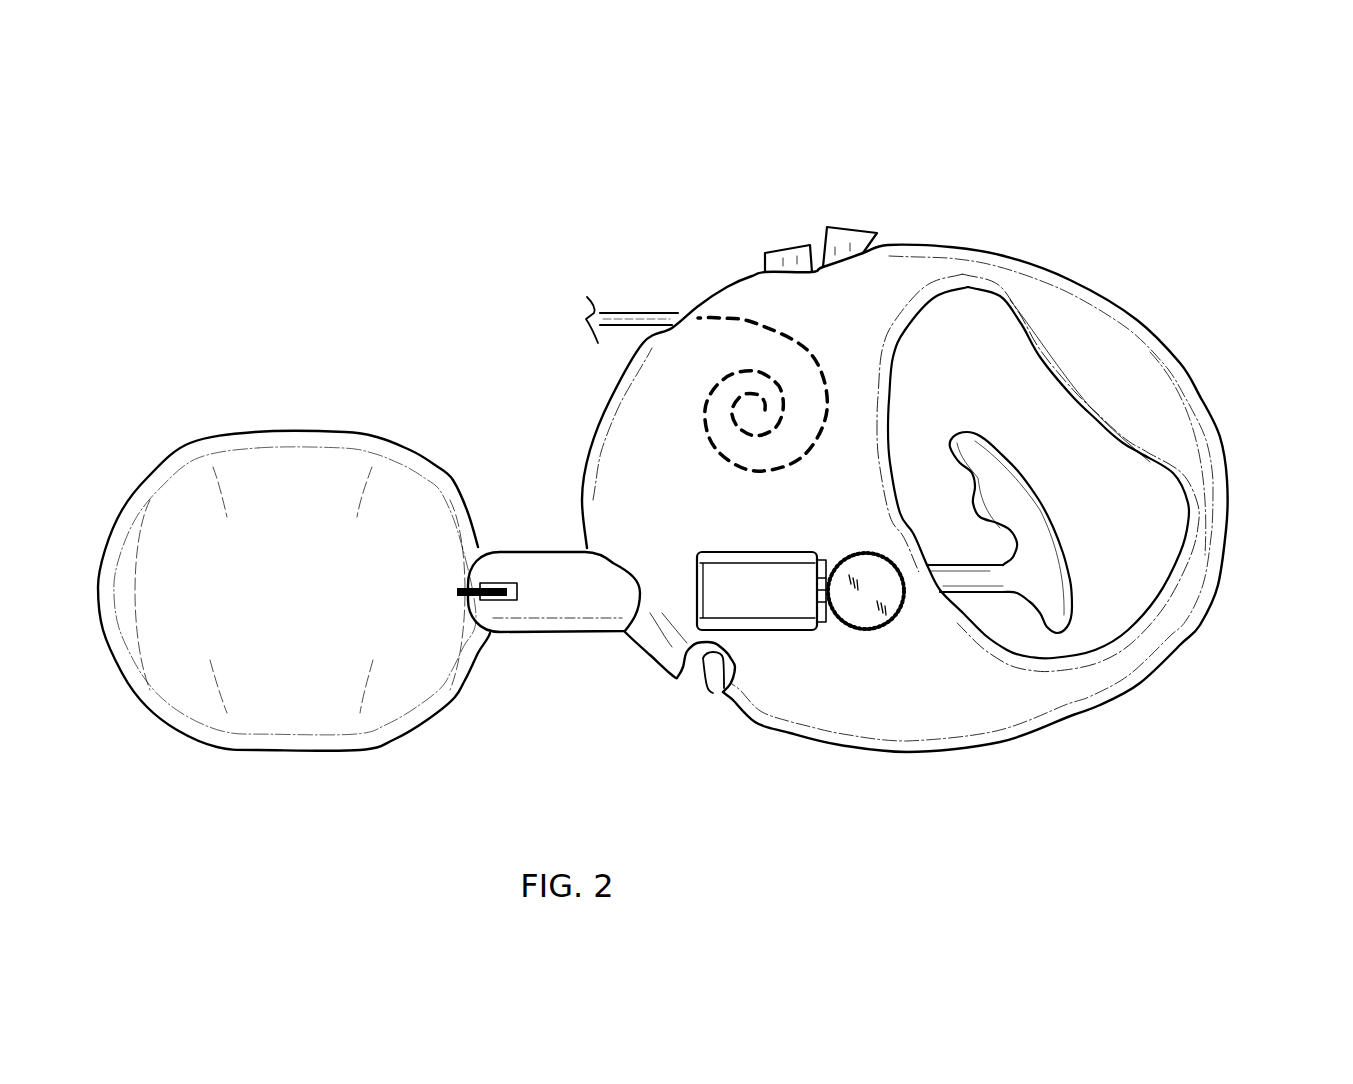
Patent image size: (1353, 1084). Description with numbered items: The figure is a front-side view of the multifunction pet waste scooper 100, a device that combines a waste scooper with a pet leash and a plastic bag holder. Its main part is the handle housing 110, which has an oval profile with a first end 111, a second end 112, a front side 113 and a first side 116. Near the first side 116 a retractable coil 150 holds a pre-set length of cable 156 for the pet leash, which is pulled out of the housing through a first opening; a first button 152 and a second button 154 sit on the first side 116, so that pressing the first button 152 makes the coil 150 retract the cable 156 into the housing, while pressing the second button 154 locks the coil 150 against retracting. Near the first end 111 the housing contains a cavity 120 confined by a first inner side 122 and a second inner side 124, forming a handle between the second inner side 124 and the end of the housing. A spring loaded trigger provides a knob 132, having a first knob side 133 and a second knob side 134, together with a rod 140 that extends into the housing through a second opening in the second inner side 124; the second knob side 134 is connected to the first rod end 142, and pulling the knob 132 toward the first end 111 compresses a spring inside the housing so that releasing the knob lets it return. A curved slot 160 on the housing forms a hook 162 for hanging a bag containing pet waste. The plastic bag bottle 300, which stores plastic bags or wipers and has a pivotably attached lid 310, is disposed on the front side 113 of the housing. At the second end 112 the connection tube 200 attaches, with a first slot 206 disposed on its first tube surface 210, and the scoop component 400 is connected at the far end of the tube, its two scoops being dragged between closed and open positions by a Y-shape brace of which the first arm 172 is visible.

The multifunction pet waste scooper 100 is at (1053, 783).
The handle housing 110 is at (887, 297).
The first end 111 is at (1182, 365).
The second end 112 is at (583, 548).
The front side 113 is at (848, 673).
The first side 116 is at (993, 252).
The cavity 120 is at (983, 330).
The first inner side 122 is at (892, 457).
The second inner side 124 is at (1103, 420).
The knob 132 is at (1037, 577).
The first knob side 133 is at (1027, 477).
The second knob side 134 is at (980, 503).
The rod 140 is at (961, 580).
The first rod end 142 is at (1002, 577).
The retractable coil 150 is at (743, 318).
The first button 152 is at (787, 262).
The second button 154 is at (838, 242).
The cable 156 is at (632, 320).
The curved slot 160 is at (700, 652).
The hook 162 is at (717, 663).
The first arm 172 is at (462, 603).
The connection tube 200 is at (557, 573).
The first slot 206 is at (512, 583).
The first tube surface 210 is at (537, 600).
The plastic bag bottle 300 is at (728, 588).
The lid 310 is at (847, 625).
The scoop component 400 is at (312, 458).